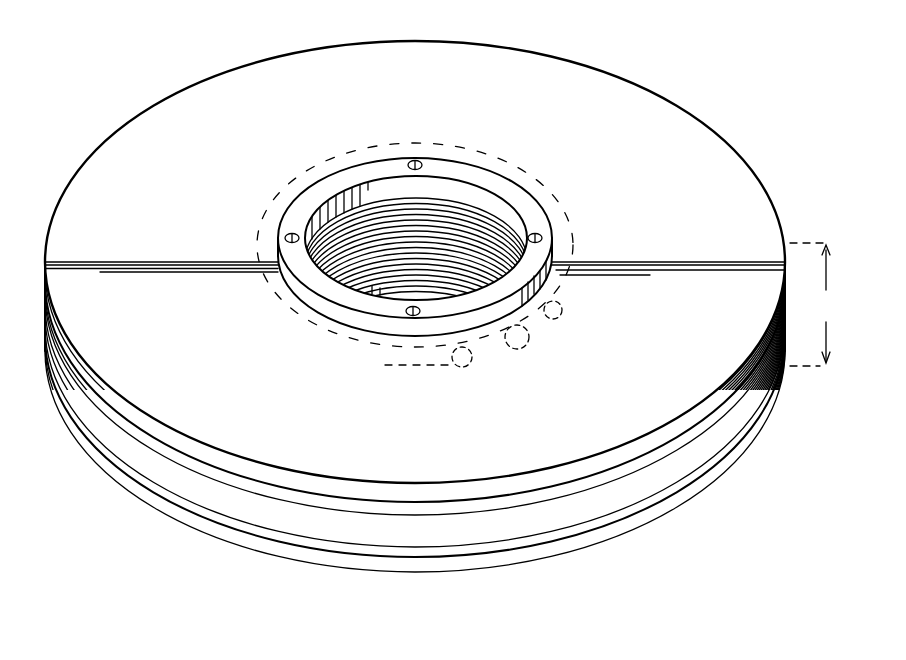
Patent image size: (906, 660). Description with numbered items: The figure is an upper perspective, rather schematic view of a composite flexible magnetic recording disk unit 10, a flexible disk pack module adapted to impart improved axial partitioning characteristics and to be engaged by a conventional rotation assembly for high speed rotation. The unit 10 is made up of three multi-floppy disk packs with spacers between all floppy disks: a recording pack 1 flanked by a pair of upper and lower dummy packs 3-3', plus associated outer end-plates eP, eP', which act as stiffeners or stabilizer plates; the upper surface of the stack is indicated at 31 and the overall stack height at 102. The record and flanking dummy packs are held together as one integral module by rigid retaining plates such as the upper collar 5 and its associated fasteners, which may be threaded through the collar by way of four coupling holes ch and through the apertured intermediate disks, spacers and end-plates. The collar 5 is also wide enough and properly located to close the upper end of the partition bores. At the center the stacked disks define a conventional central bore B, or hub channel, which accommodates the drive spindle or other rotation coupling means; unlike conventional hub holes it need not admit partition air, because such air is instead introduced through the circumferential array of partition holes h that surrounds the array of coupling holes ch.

The composite flexible magnetic recording disk unit 10 is at (681, 82).
The top surface of disc 31 is at (693, 139).
The recording pack 1 is at (428, 541).
The outer end-plate ep is at (415, 391).
The outer end-plate ep' is at (415, 473).
The dummy packs 3-3' is at (415, 426).
The stack thickness dimension 102 is at (819, 304).
The collar 5 is at (553, 250).
The central bore B is at (405, 293).
The coupling holes ch is at (418, 160).
The partition holes h is at (557, 330).